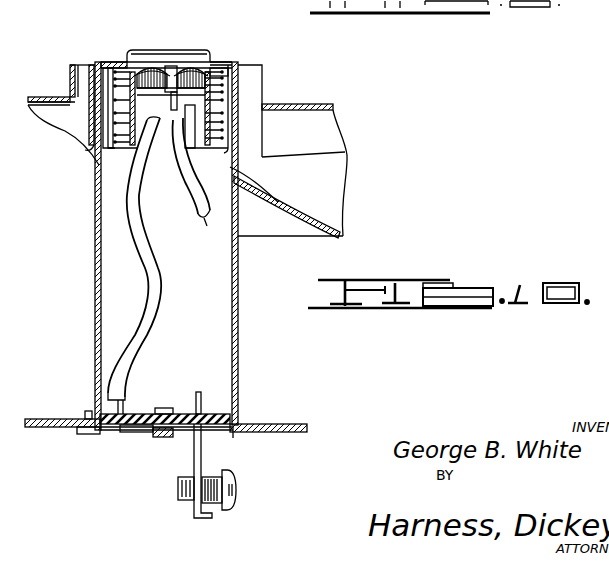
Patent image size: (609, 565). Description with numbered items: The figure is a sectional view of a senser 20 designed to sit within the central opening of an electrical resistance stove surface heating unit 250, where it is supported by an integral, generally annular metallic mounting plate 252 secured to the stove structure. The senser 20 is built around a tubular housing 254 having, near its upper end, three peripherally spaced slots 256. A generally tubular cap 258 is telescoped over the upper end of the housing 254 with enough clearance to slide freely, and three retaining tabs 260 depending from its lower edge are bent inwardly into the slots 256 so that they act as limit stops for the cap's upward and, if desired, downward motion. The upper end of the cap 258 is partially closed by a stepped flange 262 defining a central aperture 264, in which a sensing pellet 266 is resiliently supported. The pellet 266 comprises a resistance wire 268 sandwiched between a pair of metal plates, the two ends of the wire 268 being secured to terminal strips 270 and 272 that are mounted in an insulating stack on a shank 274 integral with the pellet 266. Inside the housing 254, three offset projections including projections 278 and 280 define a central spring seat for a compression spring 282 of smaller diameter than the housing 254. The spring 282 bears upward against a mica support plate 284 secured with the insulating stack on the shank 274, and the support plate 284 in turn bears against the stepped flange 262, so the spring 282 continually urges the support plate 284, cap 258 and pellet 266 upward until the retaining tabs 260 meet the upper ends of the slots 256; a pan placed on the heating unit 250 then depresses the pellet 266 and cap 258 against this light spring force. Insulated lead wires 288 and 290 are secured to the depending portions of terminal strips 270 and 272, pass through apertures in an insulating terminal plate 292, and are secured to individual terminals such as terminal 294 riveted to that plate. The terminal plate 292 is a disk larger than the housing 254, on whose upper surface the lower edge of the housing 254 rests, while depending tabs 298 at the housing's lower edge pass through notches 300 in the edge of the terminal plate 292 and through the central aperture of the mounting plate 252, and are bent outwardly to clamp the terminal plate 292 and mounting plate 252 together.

The senser 20 is at (93, 259).
The stove surface heating unit 250 is at (330, 100).
The mounting plate 252 is at (285, 424).
The tubular housing 254 is at (232, 278).
The slots 256 is at (258, 192).
The tubular cap 258 is at (264, 66).
The retaining tabs 260 is at (258, 160).
The stepped flange 262 is at (230, 60).
The central aperture 264 is at (212, 60).
The sensing pellet 266 is at (128, 57).
The resistance wire 268 is at (185, 91).
The terminal strip 270 is at (133, 100).
The terminal strip 272 is at (265, 104).
The shank 274 is at (163, 70).
The offset projection 278 is at (127, 145).
The offset projection 280 is at (186, 148).
The compression spring 282 is at (196, 120).
The support plate 284 is at (214, 64).
The insulated lead wire 288 is at (152, 263).
The insulated lead wire 290 is at (195, 212).
The insulating terminal plate 292 is at (198, 410).
The terminal 294 is at (194, 448).
The depending tabs 298 is at (233, 438).
The notches 300 is at (237, 425).